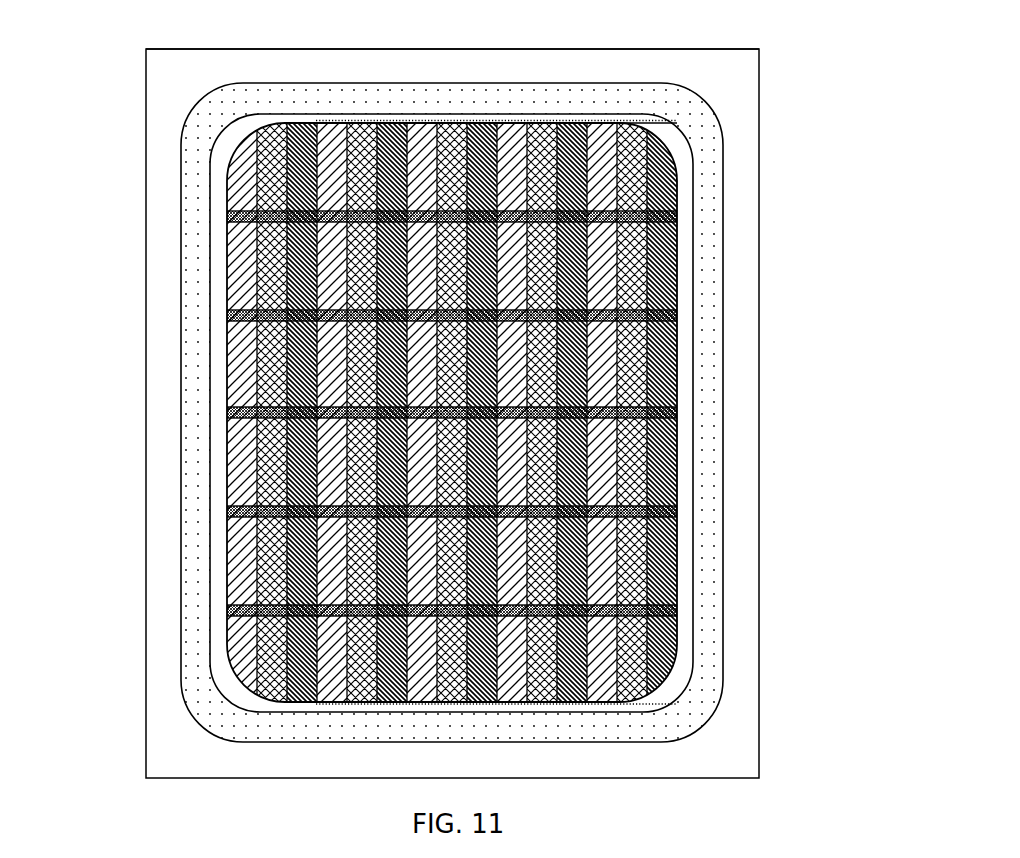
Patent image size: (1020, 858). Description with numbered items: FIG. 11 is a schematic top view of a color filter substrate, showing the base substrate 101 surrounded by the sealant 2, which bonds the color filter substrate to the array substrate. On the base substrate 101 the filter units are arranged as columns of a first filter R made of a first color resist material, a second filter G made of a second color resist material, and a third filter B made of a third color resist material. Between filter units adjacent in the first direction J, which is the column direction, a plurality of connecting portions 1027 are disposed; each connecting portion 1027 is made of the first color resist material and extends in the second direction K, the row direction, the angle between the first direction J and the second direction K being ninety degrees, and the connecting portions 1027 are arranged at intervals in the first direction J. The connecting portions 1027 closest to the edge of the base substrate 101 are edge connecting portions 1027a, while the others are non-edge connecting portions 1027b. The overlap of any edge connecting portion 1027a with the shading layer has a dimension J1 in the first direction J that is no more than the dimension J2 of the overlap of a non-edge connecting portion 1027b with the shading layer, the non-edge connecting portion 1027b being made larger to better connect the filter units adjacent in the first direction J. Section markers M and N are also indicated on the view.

The sealant 2 is at (617, 100).
The base substrate 101 is at (544, 76).
The connecting portion 1027 is at (522, 412).
The edge connecting portion 1027a is at (455, 120).
The non-edge connecting portion 1027b is at (368, 123).
The first filter R is at (613, 394).
The second filter G is at (638, 368).
The third filter B is at (657, 340).
The dimension of overlapping area of edge connecting portion J1 is at (597, 120).
The dimension of overlapping area of non-edge connecting portion J2 is at (677, 211).
The second direction K is at (202, 36).
The first direction J is at (128, 64).
The section line M is at (177, 168).
The section line N is at (294, 168).